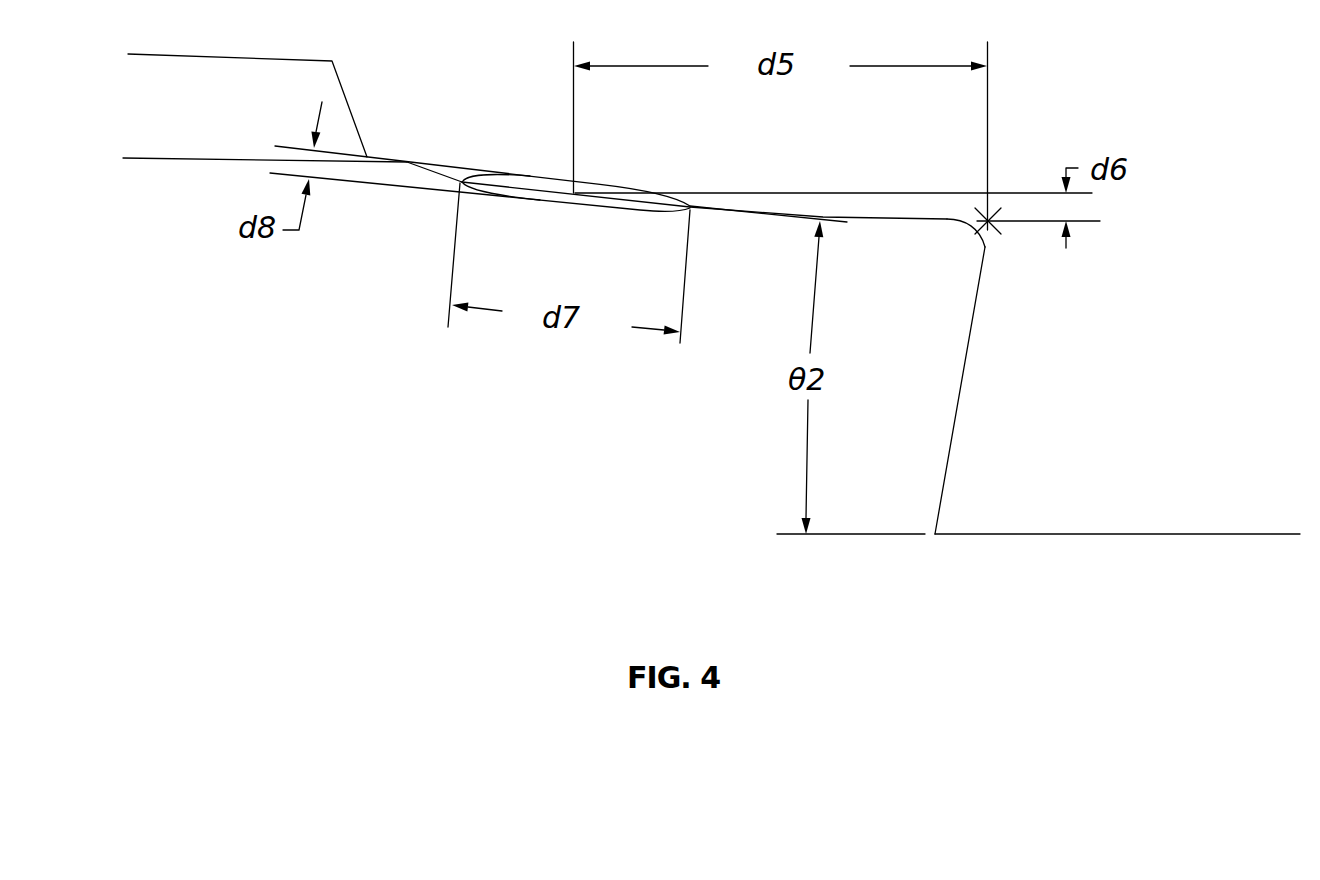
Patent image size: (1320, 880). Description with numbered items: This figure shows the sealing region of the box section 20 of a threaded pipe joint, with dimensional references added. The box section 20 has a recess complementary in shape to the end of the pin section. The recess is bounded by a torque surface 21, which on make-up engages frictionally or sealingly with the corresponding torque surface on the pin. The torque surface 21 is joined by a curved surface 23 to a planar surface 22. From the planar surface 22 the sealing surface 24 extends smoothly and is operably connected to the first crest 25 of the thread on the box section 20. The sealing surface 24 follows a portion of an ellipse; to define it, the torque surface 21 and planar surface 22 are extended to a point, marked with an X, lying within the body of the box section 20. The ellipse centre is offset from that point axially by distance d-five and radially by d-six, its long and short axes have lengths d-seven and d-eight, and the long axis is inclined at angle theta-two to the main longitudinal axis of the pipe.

The box section 20 is at (1200, 338).
The torque surface 21 is at (943, 479).
The planar surface 22 is at (888, 219).
The curved surface 23 is at (985, 246).
The sealing surface 24 is at (535, 205).
The first crest 25 is at (311, 80).